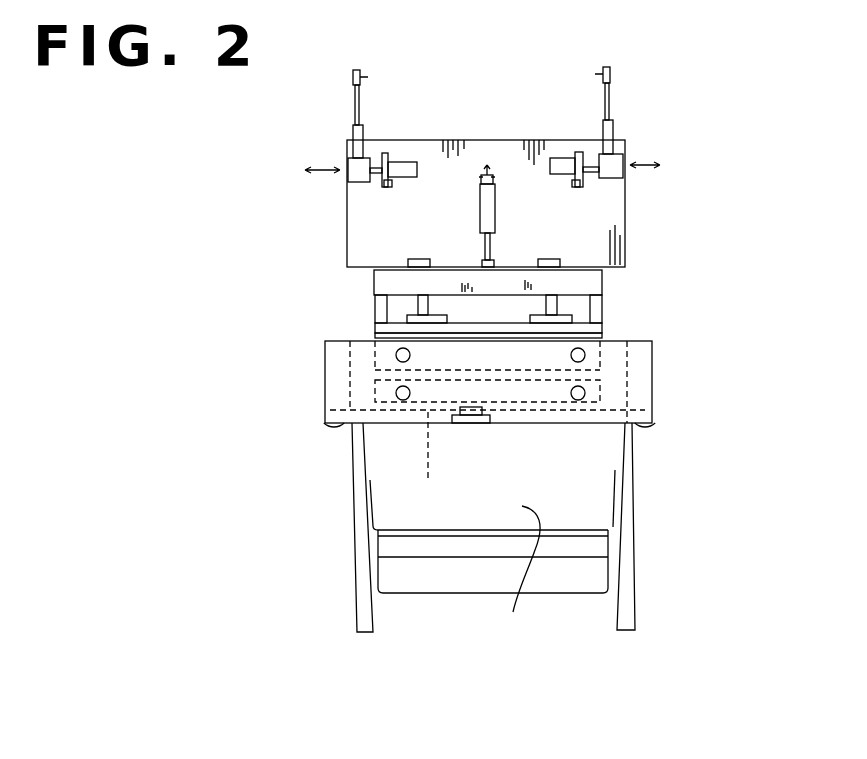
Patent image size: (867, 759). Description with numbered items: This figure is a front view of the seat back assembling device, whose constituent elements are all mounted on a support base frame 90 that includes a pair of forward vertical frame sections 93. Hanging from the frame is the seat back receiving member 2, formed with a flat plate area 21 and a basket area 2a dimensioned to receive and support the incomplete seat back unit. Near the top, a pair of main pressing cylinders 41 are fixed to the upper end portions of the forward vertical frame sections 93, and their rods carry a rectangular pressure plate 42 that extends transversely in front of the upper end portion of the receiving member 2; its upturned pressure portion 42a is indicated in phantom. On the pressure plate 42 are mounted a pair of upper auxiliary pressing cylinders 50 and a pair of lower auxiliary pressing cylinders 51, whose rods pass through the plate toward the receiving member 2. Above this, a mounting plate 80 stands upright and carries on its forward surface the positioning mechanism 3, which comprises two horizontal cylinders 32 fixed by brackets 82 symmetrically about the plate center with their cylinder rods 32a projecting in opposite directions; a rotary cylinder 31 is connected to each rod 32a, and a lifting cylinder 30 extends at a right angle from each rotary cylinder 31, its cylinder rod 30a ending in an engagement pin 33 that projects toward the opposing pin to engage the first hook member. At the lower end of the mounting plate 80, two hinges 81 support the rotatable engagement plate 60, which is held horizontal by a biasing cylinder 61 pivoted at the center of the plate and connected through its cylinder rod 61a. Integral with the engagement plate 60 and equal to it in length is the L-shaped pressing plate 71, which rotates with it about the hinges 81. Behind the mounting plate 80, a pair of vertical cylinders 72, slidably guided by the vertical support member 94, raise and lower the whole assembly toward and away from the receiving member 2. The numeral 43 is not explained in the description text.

The seat back receiving member 2 is at (436, 608).
The basket area 2a is at (520, 575).
The positioning mechanism 3 is at (393, 62).
The flat plate area 21 is at (543, 472).
The lifting cylinder 30 is at (353, 130).
The cylinder rod 30a is at (355, 95).
The rotary cylinder 31 is at (350, 165).
The horizontal cylinder 32 is at (405, 160).
The cylinder rod 32a is at (382, 178).
The engagement pin 33 is at (374, 80).
The main pressing cylinder 41 is at (322, 419).
The pressure plate 42 is at (583, 418).
The upturned pressure portion 42a is at (429, 458).
The stopper 43 is at (472, 428).
The upper auxiliary pressing cylinder 50 is at (396, 352).
The lower auxiliary pressing cylinder 51 is at (396, 393).
The rotatable engagement plate 60 is at (396, 270).
The biasing cylinder 61 is at (482, 205).
The cylinder rod 61a is at (483, 245).
The pressing plate 71 is at (598, 280).
The vertical cylinder 72 is at (400, 318).
The mounting plate 80 is at (510, 155).
The hinge 81 is at (412, 258).
The bracket 82 is at (392, 187).
The support base frame 90 is at (647, 505).
The forward vertical frame section 93 is at (354, 560).
The vertical support member 94 is at (385, 308).